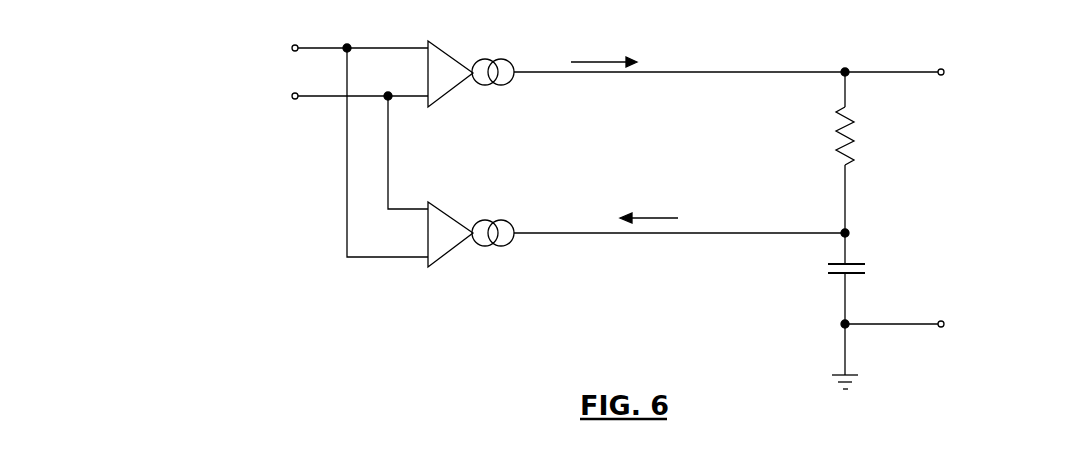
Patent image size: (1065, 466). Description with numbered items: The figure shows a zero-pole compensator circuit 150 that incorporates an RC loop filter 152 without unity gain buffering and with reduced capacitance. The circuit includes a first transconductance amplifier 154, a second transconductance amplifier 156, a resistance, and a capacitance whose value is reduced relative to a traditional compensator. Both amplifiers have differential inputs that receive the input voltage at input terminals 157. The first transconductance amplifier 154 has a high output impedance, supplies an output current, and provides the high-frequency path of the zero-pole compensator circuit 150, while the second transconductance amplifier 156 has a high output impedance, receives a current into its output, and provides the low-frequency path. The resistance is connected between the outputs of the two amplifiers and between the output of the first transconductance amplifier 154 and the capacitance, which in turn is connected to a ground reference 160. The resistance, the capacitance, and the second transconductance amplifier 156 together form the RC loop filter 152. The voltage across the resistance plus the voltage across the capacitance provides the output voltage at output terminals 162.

The zero-pole compensator circuit 150 is at (217, 33).
The RC loop filter 152 is at (845, 48).
The first transconductance amplifier 154 is at (461, 52).
The second transconductance amplifier 156 is at (461, 212).
The input terminals 157 is at (297, 52).
The ground reference 160 is at (838, 374).
The output terminals 162 is at (946, 321).